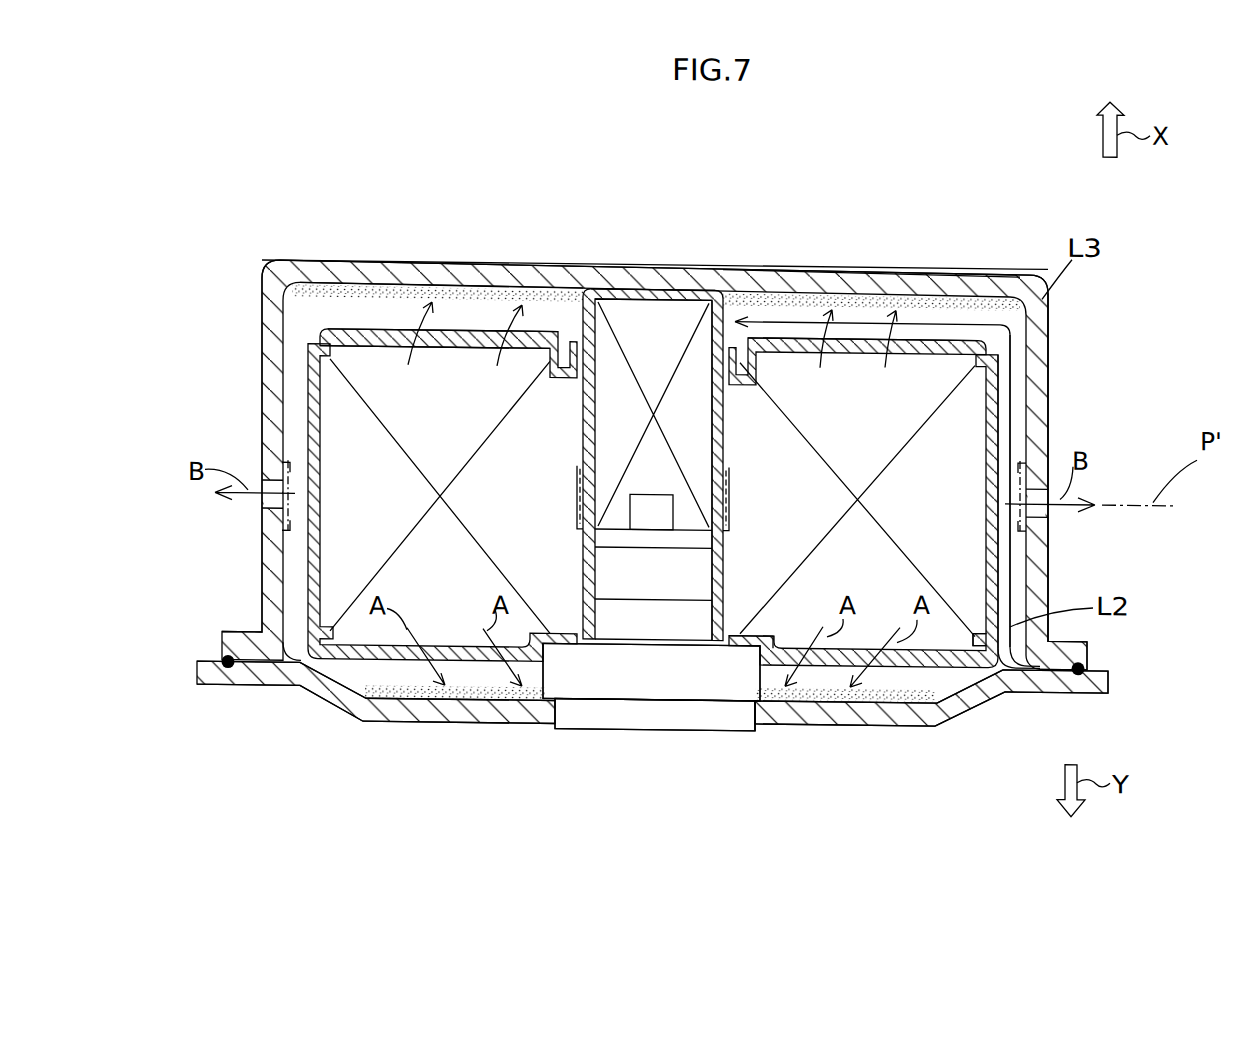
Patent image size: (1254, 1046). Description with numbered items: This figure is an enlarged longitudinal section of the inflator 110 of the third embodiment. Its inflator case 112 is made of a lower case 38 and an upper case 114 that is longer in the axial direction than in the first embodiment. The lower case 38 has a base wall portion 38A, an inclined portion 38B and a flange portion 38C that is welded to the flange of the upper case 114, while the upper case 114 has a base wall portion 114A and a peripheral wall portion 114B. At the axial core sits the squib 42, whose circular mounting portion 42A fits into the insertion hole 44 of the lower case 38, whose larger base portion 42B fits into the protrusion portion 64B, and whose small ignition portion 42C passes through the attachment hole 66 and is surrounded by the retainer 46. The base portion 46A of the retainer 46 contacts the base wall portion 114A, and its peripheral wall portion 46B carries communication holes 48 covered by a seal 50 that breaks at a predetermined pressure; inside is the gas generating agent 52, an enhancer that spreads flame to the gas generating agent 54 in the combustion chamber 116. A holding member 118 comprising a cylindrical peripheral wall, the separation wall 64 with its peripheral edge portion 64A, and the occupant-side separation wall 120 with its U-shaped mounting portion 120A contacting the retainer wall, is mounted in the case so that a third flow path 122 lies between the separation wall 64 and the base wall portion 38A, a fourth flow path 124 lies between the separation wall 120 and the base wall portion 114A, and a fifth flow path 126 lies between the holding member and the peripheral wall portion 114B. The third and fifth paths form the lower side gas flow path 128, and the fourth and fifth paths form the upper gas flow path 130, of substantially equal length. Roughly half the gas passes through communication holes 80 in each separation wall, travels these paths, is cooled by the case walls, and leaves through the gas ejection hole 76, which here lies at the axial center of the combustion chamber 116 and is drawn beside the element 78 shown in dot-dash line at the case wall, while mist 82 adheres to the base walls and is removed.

The lower case 38 is at (652, 691).
The base wall portion 38A is at (453, 711).
The inclined portion 38B is at (990, 686).
The flange portion 38C is at (1077, 677).
The squib 42 is at (679, 737).
The mounting portion 42A is at (640, 723).
The base portion 42B is at (600, 688).
The ignition portion 42C is at (683, 568).
The insertion hole 44 is at (748, 723).
The retainer 46 is at (572, 441).
The base portion 46A is at (662, 288).
The peripheral wall portion 46B is at (717, 404).
The communication holes 48 is at (587, 503).
The seal 50 is at (577, 487).
The gas generating agent 52 is at (678, 288).
The gas generating agent 54 is at (872, 286).
The separation wall 64 is at (993, 684).
The peripheral edge portion 64A is at (977, 625).
The protrusion portion 64B is at (753, 624).
The attachment hole 66 is at (720, 641).
The gas ejection hole 76 is at (285, 505).
The projection 78 is at (290, 460).
The communication holes 80 is at (480, 348).
The mist 82 is at (572, 289).
The inflator 110 is at (959, 191).
The inflator case 112 is at (900, 719).
The upper case 114 is at (812, 263).
The base wall portion 114A is at (632, 276).
The peripheral wall portion 114B is at (1047, 310).
The combustion chamber 116 is at (857, 421).
The holding member 118 is at (1012, 355).
The separation wall 120 is at (992, 305).
The mounting portion 120A is at (543, 360).
The third flow path 122 is at (827, 695).
The fourth flow path 124 is at (960, 315).
The fifth flow path 126 is at (1002, 376).
The lower side gas flow path 128 is at (1018, 546).
The upper gas flow path 130 is at (1017, 426).